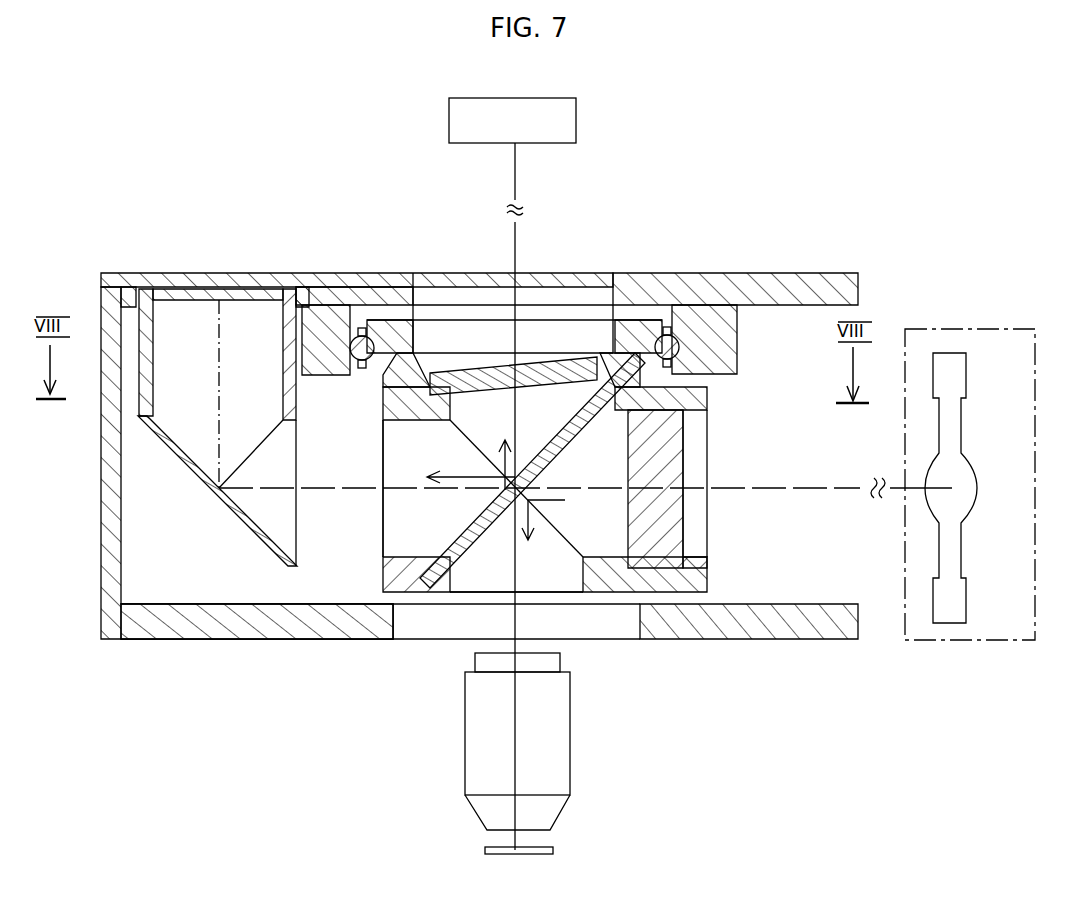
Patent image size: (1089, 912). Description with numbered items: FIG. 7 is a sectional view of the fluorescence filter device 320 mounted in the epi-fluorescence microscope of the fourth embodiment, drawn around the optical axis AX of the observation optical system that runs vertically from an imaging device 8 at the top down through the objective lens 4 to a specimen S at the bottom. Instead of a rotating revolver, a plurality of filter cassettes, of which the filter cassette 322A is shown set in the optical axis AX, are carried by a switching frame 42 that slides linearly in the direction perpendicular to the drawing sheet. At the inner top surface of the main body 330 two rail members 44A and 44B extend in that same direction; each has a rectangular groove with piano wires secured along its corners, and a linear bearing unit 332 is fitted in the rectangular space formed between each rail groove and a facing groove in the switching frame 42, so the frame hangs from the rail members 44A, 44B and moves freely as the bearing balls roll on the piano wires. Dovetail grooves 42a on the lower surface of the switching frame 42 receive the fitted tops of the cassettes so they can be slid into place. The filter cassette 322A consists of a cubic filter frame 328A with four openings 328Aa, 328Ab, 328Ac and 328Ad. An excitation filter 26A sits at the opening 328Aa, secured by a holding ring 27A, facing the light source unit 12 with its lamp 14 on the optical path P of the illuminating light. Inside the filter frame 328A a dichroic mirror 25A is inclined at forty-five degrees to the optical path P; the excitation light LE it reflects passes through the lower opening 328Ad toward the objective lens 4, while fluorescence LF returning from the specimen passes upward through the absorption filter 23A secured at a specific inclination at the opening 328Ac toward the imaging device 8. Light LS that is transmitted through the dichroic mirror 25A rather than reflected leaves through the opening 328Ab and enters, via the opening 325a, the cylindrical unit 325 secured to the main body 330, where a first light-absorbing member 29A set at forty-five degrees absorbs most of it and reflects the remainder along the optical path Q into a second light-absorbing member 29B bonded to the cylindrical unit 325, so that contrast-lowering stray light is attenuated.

The imaging device 8 is at (576, 118).
The optical axis AX is at (520, 716).
The cylindrical unit 325 is at (186, 272).
The main body 330 is at (793, 272).
The second light-absorbing member 29B is at (224, 387).
The optical path Q is at (233, 374).
The first light-absorbing member 29A is at (229, 512).
The opening 325a is at (300, 452).
The rail member 44A is at (330, 305).
The rail member 44B is at (722, 305).
The linear bearing unit 332 is at (343, 305).
The switching frame 42 is at (366, 335).
The dovetail grooves 42a is at (398, 328).
The opening 328Ac is at (546, 352).
The absorption filter 23A is at (468, 372).
The filter frame 328A is at (710, 580).
The opening 328Aa is at (715, 462).
The opening 328Ab is at (385, 552).
The opening 328Ad is at (462, 584).
The excitation filter 26A is at (683, 422).
The holding ring 27A is at (690, 556).
The dichroic mirror 25A is at (576, 430).
The light LS is at (471, 467).
The fluorescence light flux LF is at (490, 445).
The excitation light LE is at (561, 520).
The filter cassette 322A is at (728, 402).
The fluorescence filter device 320 is at (871, 241).
The light source unit 12 is at (1012, 329).
The lamp 14 is at (966, 409).
The optical path P is at (868, 490).
The objective lens 4 is at (571, 756).
The specimen S is at (553, 851).